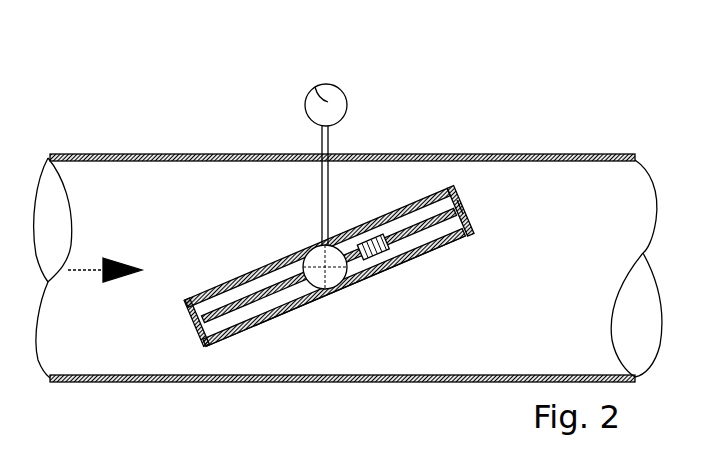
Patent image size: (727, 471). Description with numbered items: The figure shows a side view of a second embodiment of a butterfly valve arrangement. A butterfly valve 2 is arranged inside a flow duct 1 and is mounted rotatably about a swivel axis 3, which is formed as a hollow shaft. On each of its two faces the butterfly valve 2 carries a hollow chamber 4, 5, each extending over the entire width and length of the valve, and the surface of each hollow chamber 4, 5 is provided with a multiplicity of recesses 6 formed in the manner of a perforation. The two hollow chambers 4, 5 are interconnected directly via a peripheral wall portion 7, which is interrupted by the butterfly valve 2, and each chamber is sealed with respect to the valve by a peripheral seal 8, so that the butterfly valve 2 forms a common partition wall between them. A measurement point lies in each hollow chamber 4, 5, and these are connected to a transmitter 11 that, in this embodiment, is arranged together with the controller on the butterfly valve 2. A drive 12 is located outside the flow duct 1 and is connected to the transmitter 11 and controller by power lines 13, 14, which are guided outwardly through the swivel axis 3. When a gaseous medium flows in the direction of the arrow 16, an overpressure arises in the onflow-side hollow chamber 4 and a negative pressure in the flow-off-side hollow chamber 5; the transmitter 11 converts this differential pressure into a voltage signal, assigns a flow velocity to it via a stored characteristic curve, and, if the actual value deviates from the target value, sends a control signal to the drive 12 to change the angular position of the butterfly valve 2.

The flow duct 1 is at (520, 162).
The butterfly valve 2 is at (240, 288).
The swivel axis 3 is at (333, 280).
The hollow chamber 4 is at (392, 222).
The hollow chamber 5 is at (422, 240).
The recesses 6 is at (281, 313).
The peripheral wall portion 7 is at (450, 186).
The peripheral seal 8 is at (461, 214).
The transmitter 11 is at (363, 227).
The drive 12 is at (318, 88).
The power line 13 is at (322, 148).
The power line 14 is at (330, 148).
The arrow 16 is at (83, 270).